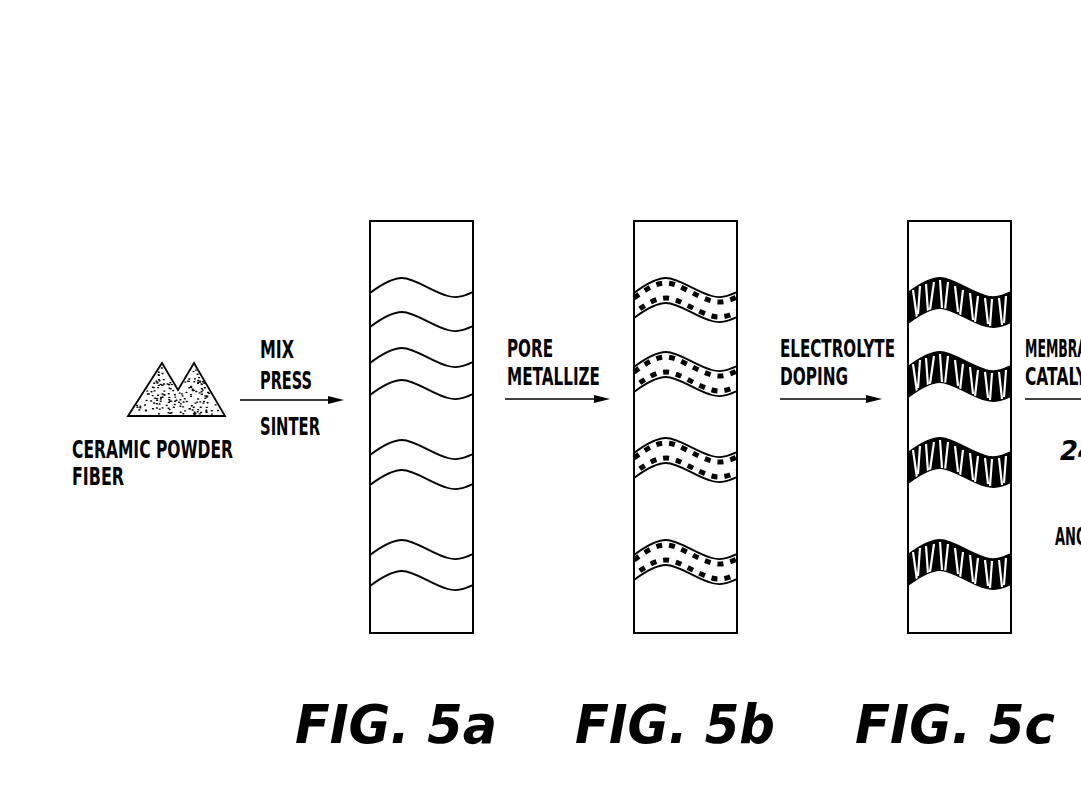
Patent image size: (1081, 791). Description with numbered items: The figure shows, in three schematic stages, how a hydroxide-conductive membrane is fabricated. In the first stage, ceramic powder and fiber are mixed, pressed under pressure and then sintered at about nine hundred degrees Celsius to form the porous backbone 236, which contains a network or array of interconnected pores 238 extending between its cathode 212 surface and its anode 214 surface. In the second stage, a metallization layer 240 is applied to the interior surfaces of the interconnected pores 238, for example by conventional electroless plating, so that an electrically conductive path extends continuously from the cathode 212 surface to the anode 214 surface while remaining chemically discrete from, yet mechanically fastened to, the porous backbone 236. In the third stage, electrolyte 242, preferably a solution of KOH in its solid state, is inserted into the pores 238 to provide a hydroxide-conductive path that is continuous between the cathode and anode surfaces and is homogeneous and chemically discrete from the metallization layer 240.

In FIG. 5A, the cathode surface 212 is at (473, 257).
In FIG. 5B, the cathode surface 212 is at (737, 257).
In FIG. 5C, the cathode surface 212 is at (1011, 257).
In FIG. 5A, the anode surface 214 is at (370, 257).
In FIG. 5B, the anode surface 214 is at (634, 257).
In FIG. 5C, the anode surface 214 is at (908, 257).
In FIG. 5A, the porous backbone 236 is at (421, 427).
In FIG. 5B, the porous backbone 236 is at (685, 427).
In FIG. 5C, the porous backbone 236 is at (959, 427).
In FIG. 5A, the interconnected pores 238 is at (388, 444).
In FIG. 5B, the metallization layer 240 is at (657, 452).
In FIG. 5C, the electrolyte 242 is at (910, 462).